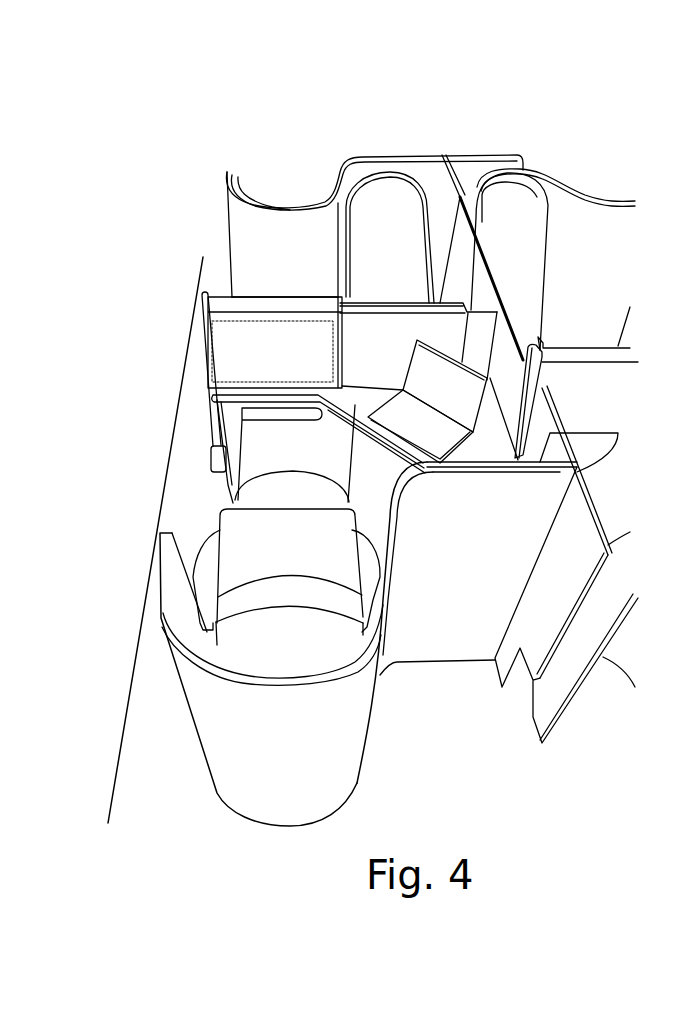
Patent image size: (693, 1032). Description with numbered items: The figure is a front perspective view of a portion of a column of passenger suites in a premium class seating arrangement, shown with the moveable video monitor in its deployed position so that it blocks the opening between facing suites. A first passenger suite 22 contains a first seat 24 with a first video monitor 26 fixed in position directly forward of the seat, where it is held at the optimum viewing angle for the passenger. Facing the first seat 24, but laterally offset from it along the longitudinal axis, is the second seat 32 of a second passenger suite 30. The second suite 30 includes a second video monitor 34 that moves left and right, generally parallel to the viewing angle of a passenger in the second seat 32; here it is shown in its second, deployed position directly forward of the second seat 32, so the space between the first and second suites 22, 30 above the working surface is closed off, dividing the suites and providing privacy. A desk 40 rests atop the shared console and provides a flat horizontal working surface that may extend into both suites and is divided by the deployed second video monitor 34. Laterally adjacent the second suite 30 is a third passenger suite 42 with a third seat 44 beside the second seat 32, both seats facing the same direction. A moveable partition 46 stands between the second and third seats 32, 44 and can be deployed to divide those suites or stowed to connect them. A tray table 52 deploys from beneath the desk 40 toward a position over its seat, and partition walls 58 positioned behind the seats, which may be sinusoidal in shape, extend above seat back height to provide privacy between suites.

The first passenger suite 22 is at (433, 702).
The first seat 24 is at (243, 566).
The first video monitor 26 is at (245, 347).
The second passenger suite 30 is at (314, 149).
The second seat 32 is at (372, 205).
The second video monitor 34 is at (413, 307).
The desk 40 is at (353, 405).
The third passenger suite 42 is at (598, 171).
The third seat 44 is at (525, 202).
The moveable partition 46 is at (465, 268).
The tray table 52 is at (210, 402).
The partition walls 58 is at (227, 740).